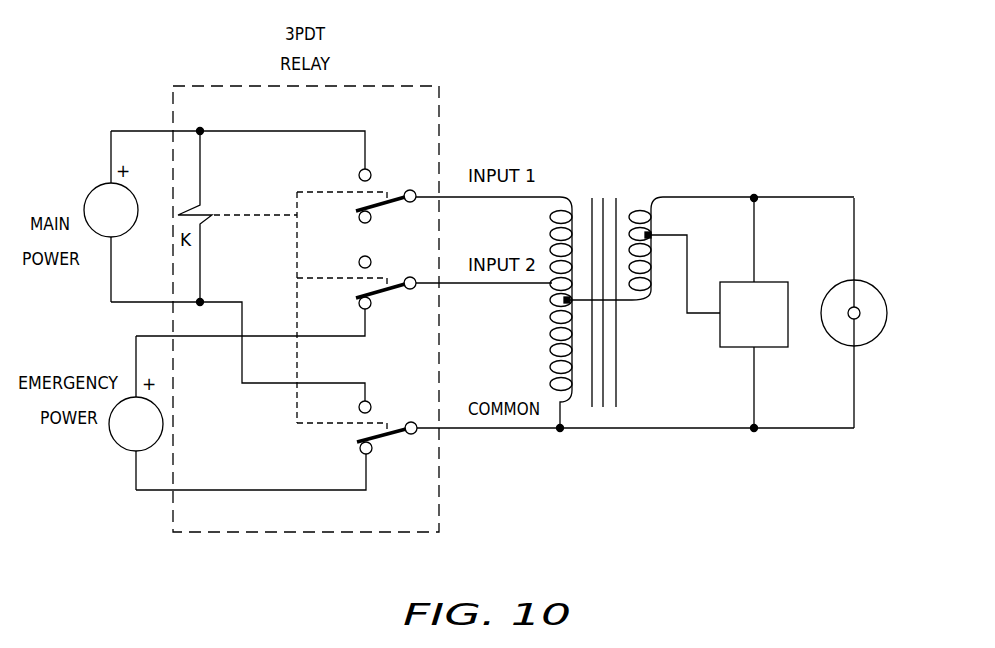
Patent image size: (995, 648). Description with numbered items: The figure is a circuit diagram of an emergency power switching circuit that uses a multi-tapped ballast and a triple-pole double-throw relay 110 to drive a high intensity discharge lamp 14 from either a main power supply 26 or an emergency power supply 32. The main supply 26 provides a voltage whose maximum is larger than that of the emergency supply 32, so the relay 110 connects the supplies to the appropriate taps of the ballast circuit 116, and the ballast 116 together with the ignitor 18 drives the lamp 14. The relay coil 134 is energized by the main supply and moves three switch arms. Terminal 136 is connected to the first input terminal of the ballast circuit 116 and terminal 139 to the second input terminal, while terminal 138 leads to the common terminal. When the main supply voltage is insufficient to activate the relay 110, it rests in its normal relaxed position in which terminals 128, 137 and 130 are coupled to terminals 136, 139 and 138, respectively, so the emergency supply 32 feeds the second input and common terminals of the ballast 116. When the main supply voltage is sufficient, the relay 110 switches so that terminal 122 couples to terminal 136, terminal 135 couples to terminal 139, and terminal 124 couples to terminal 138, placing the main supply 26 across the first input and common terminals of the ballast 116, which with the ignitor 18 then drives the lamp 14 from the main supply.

The triple-pole double-throw relay 110 is at (447, 75).
The relay coil K 134 is at (212, 214).
The relay terminal 122 is at (370, 170).
The relay terminal 124 is at (371, 403).
The relay terminal 128 is at (370, 222).
The relay terminal 130 is at (371, 452).
The relay terminal 135 is at (360, 258).
The relay terminal 136 is at (414, 190).
The relay terminal 137 is at (371, 307).
The relay terminal 138 is at (418, 432).
The relay terminal 139 is at (413, 278).
The main power supply 26 is at (125, 228).
The emergency power source V2 32 is at (124, 443).
The ballast circuit 116 is at (633, 176).
The ignitor 18 is at (728, 347).
The high intensity discharge lamp 14 is at (840, 285).